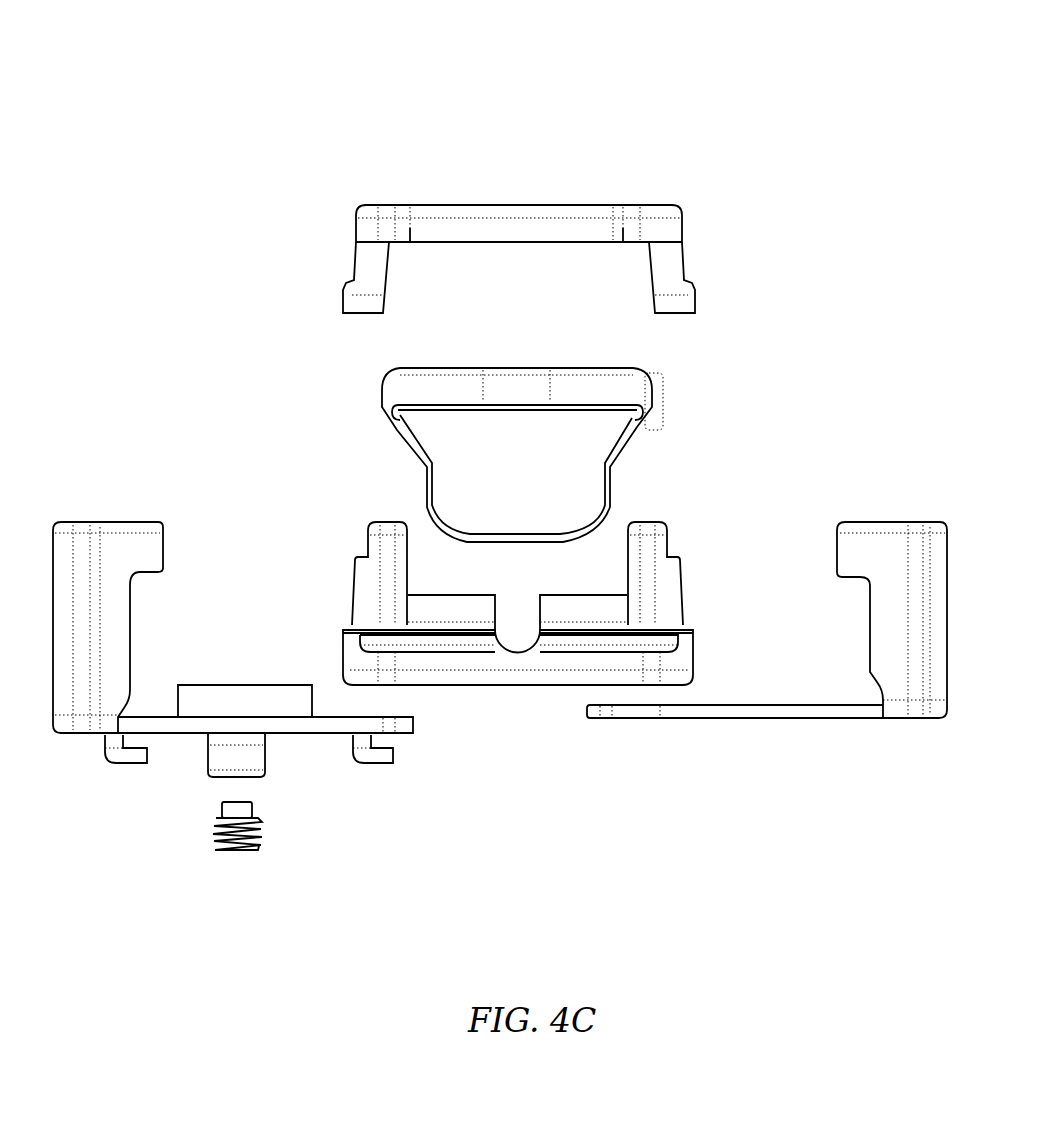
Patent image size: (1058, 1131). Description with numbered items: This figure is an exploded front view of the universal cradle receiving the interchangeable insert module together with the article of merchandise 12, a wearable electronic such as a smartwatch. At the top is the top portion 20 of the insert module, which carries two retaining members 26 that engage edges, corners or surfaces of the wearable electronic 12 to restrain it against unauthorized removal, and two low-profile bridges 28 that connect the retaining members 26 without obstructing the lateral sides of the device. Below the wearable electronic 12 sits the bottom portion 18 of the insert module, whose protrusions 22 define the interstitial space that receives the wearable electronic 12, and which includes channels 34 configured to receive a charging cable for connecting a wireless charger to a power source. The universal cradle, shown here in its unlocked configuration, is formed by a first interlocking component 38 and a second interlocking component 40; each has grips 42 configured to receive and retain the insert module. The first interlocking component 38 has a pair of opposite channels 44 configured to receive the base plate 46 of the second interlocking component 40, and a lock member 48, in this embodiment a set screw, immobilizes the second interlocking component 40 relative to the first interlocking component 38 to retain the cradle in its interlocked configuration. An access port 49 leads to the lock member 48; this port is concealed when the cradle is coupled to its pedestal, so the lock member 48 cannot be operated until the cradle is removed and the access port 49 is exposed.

The article of merchandise 12 is at (382, 403).
The bottom portion 18 is at (569, 624).
The top portion 20 is at (515, 162).
The protrusions 22 is at (667, 540).
The retaining members 26 is at (593, 205).
The bridges 28 is at (693, 297).
The channels 34 is at (518, 647).
The first interlocking component 38 is at (95, 492).
The second interlocking component 40 is at (880, 498).
The grips 42 is at (124, 565).
The channels 44 is at (312, 700).
The base plate 46 is at (717, 718).
The lock member 48 is at (260, 823).
The access port 49 is at (223, 777).